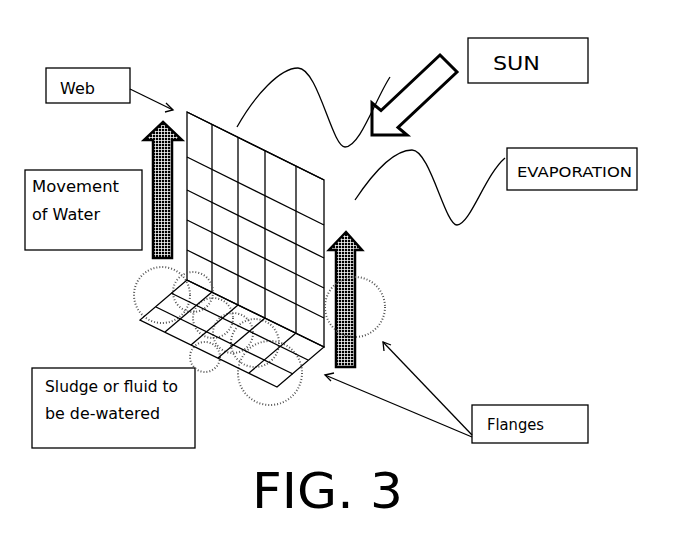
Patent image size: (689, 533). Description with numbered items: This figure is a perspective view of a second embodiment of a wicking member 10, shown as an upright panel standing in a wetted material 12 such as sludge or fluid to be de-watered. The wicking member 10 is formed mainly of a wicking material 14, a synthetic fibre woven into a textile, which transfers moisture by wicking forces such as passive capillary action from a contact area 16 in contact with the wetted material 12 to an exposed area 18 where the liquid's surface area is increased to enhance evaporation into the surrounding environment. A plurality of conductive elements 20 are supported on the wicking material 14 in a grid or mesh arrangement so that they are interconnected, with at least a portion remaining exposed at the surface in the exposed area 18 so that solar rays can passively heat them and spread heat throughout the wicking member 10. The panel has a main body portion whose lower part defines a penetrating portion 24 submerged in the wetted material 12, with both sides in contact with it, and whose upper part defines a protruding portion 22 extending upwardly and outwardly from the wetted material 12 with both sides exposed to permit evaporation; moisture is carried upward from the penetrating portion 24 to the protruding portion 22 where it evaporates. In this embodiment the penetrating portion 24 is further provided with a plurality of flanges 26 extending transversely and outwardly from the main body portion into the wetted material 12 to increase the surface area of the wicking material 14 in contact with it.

The wicking member 10 is at (429, 167).
The wetted material 12 is at (280, 397).
The wicking material 14 is at (198, 137).
The contact area 16 is at (190, 337).
The exposed area 18 is at (250, 142).
The conductive elements 20 is at (210, 182).
The protruding portion 22 is at (366, 288).
The penetrating portion 24 is at (399, 314).
The flanges 26 is at (378, 292).